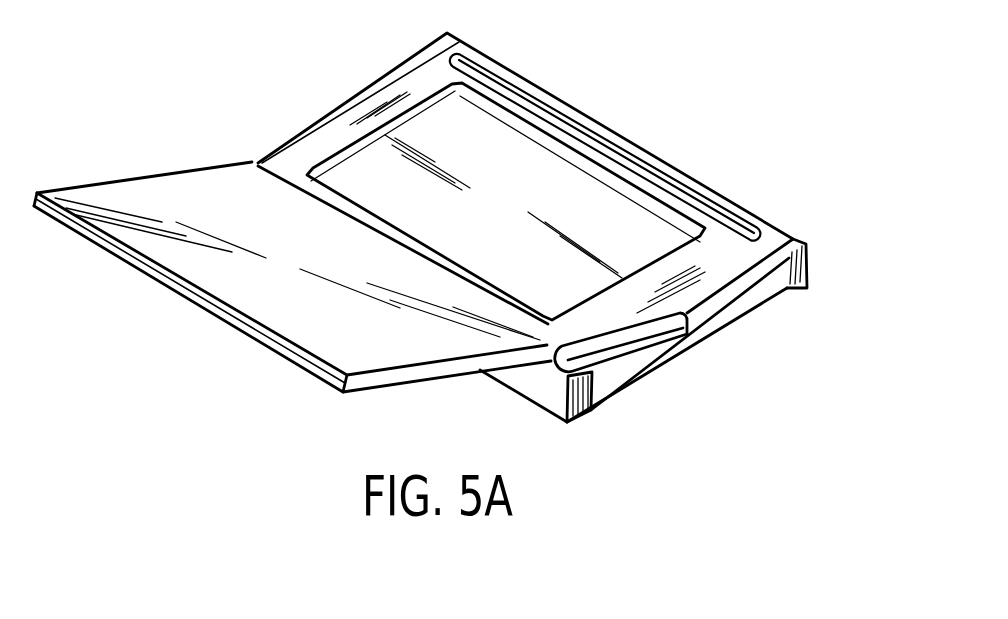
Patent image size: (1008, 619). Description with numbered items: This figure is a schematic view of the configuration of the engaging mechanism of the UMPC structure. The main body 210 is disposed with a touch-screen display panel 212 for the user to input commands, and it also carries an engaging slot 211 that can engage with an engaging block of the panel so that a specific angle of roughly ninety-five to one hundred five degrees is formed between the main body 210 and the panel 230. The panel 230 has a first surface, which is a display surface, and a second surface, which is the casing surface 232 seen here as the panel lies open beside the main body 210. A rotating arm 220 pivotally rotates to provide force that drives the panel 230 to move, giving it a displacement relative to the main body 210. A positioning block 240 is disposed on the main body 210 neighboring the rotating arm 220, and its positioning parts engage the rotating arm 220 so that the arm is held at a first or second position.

The main body 210 is at (302, 153).
The engaging slot 211 is at (740, 222).
The touch-screen display panel 212 is at (583, 180).
The rotating arm 220 is at (590, 358).
The panel 230 is at (259, 370).
The casing surface 232 is at (195, 200).
The positioning block 240 is at (692, 350).